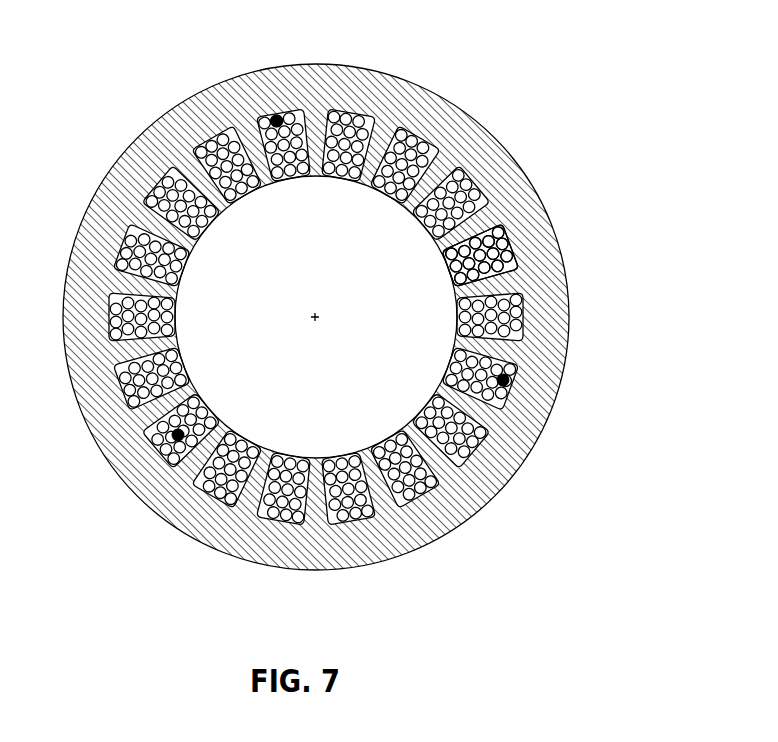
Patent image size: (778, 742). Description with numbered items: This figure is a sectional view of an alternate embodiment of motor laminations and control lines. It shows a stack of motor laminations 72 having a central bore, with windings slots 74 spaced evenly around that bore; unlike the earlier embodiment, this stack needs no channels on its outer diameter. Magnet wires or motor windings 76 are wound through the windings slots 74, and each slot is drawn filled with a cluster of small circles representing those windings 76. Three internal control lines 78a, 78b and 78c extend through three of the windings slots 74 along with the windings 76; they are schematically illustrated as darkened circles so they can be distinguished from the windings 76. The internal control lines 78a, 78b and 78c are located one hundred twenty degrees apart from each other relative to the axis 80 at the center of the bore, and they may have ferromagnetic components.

The stack of motor laminations 72 is at (458, 120).
The windings slots 74 is at (524, 317).
The motor windings 76 is at (505, 228).
The internal control line 78a is at (280, 116).
The internal control line 78b is at (509, 380).
The internal control line 78c is at (175, 440).
The axis 80 is at (313, 321).